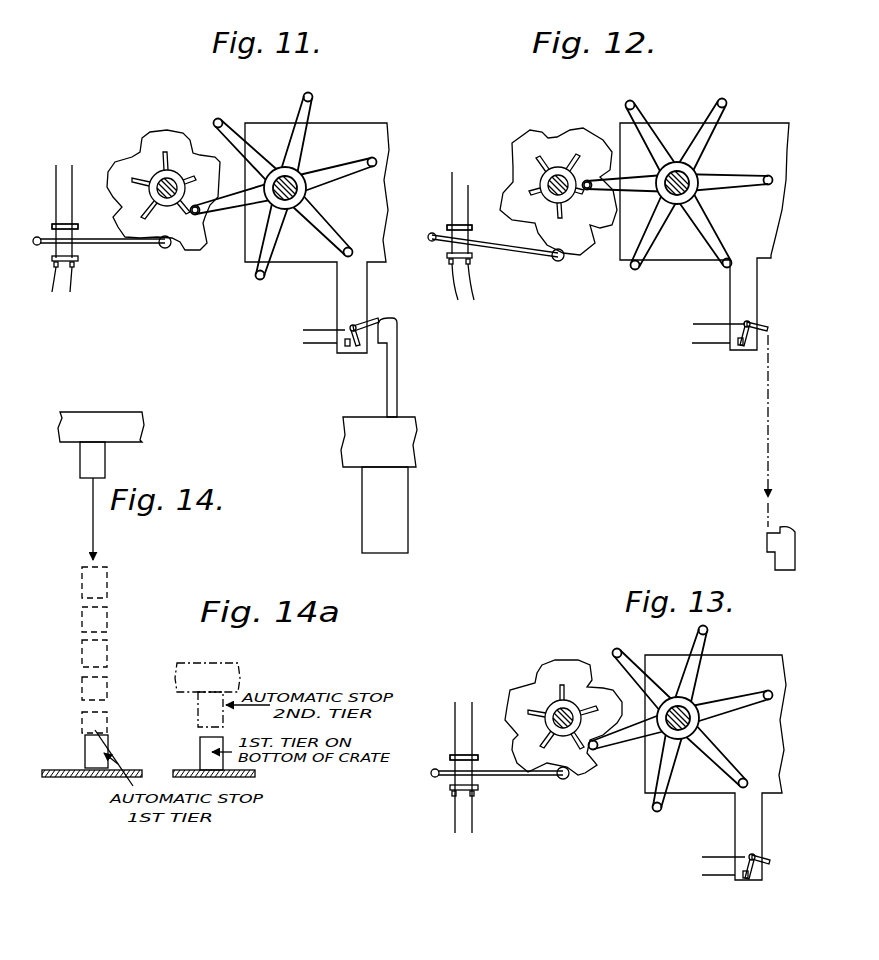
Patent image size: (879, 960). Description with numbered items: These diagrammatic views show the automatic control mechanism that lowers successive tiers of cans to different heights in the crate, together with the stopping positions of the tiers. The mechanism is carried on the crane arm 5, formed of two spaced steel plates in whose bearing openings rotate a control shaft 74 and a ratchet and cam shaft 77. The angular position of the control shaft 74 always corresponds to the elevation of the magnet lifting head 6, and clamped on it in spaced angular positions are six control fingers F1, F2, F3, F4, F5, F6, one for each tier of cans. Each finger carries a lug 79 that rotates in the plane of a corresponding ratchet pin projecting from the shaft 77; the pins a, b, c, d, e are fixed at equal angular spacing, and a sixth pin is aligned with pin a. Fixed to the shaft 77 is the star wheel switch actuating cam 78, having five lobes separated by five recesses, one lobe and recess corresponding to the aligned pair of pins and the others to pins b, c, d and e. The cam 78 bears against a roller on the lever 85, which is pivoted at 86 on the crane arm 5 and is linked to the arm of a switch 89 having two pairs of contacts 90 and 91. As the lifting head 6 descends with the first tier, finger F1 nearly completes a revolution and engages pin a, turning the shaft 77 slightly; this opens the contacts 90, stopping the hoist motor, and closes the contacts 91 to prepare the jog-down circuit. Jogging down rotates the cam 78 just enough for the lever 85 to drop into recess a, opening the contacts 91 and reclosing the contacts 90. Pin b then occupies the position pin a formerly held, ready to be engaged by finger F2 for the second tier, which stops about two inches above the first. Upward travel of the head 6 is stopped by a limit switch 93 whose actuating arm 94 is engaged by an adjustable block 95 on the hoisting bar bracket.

In FIG. 11, the crane arm 5 is at (352, 130).
In FIG. 12, the crane arm 5 is at (752, 128).
In FIG. 13, the crane arm 5 is at (752, 662).
In FIG. 11, the magnet lifting head 6 is at (402, 436).
In FIG. 14, the magnet lifting head 6 is at (125, 418).
In FIG. 14A, the magnet lifting head 6 is at (220, 678).
In FIG. 11, the control shaft 74 is at (284, 186).
In FIG. 12, the control shaft 74 is at (678, 184).
In FIG. 13, the control shaft 74 is at (681, 719).
In FIG. 11, the ratchet and cam shaft 77 is at (160, 185).
In FIG. 12, the ratchet and cam shaft 77 is at (548, 183).
In FIG. 13, the ratchet and cam shaft 77 is at (548, 712).
In FIG. 11, the star wheel switch actuating cam 78 is at (172, 134).
In FIG. 12, the star wheel switch actuating cam 78 is at (526, 142).
In FIG. 13, the star wheel switch actuating cam 78 is at (568, 662).
In FIG. 11, the lug 79 is at (200, 218).
In FIG. 12, the lug 79 is at (588, 180).
In FIG. 11, the lever 85 is at (132, 244).
In FIG. 12, the lever 85 is at (494, 249).
In FIG. 13, the lever 85 is at (511, 777).
In FIG. 11, the pivot 86 is at (37, 246).
In FIG. 12, the pivot 86 is at (432, 232).
In FIG. 13, the pivot 86 is at (432, 778).
In FIG. 11, the switch 89 is at (72, 244).
In FIG. 12, the switch 89 is at (456, 249).
In FIG. 13, the switch 89 is at (446, 770).
In FIG. 11, the contacts 90 is at (58, 224).
In FIG. 12, the contacts 90 is at (470, 225).
In FIG. 13, the contacts 90 is at (455, 757).
In FIG. 11, the contacts 91 is at (56, 272).
In FIG. 12, the contacts 91 is at (470, 272).
In FIG. 11, the limit switch 93 is at (335, 358).
In FIG. 12, the limit switch 93 is at (734, 356).
In FIG. 13, the limit switch 93 is at (742, 886).
In FIG. 11, the actuating arm 94 is at (375, 318).
In FIG. 12, the actuating arm 94 is at (756, 326).
In FIG. 11, the block 95 is at (380, 345).
In FIG. 12, the block 95 is at (772, 540).
In FIG. 11, the control finger F1 is at (239, 197).
In FIG. 12, the control finger F1 is at (630, 182).
In FIG. 13, the control finger F1 is at (635, 729).
In FIG. 11, the control finger F2 is at (275, 233).
In FIG. 12, the control finger F2 is at (658, 224).
In FIG. 13, the control finger F2 is at (670, 764).
In FIG. 11, the control finger F3 is at (316, 219).
In FIG. 12, the control finger F3 is at (700, 223).
In FIG. 13, the control finger F3 is at (710, 750).
In FIG. 11, the control finger F4 is at (329, 178).
In FIG. 12, the control finger F4 is at (725, 183).
In FIG. 13, the control finger F4 is at (724, 709).
In FIG. 11, the control finger F5 is at (294, 142).
In FIG. 12, the control finger F5 is at (698, 143).
In FIG. 13, the control finger F5 is at (688, 673).
In FIG. 11, the control finger F6 is at (253, 157).
In FIG. 12, the control finger F6 is at (656, 145).
In FIG. 13, the control finger F6 is at (649, 687).
In FIG. 11, the ratchet pin a is at (200, 150).
In FIG. 12, the ratchet pin a is at (600, 196).
In FIG. 13, the ratchet pin a is at (575, 780).
In FIG. 11, the ratchet pin b is at (152, 138).
In FIG. 12, the ratchet pin b is at (575, 157).
In FIG. 13, the ratchet pin b is at (607, 752).
In FIG. 11, the ratchet pin c is at (120, 173).
In FIG. 12, the ratchet pin c is at (545, 134).
In FIG. 13, the ratchet pin c is at (600, 695).
In FIG. 11, the ratchet pin d is at (128, 213).
In FIG. 12, the ratchet pin d is at (512, 214).
In FIG. 13, the ratchet pin d is at (543, 676).
In FIG. 11, the ratchet pin e is at (190, 235).
In FIG. 12, the ratchet pin e is at (556, 232).
In FIG. 13, the ratchet pin e is at (512, 745).